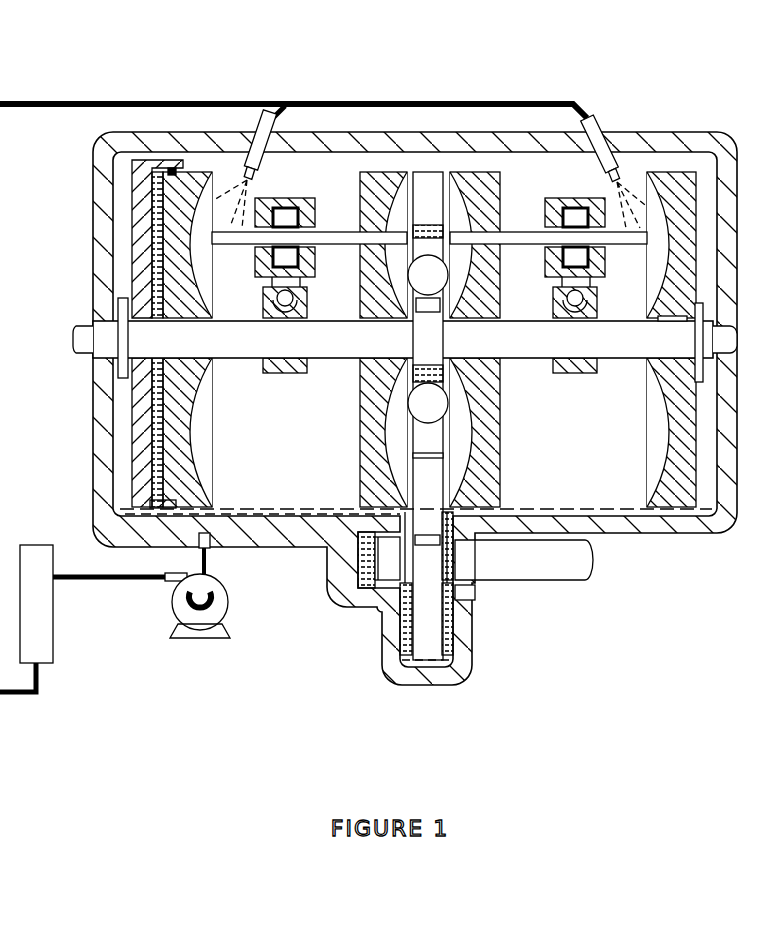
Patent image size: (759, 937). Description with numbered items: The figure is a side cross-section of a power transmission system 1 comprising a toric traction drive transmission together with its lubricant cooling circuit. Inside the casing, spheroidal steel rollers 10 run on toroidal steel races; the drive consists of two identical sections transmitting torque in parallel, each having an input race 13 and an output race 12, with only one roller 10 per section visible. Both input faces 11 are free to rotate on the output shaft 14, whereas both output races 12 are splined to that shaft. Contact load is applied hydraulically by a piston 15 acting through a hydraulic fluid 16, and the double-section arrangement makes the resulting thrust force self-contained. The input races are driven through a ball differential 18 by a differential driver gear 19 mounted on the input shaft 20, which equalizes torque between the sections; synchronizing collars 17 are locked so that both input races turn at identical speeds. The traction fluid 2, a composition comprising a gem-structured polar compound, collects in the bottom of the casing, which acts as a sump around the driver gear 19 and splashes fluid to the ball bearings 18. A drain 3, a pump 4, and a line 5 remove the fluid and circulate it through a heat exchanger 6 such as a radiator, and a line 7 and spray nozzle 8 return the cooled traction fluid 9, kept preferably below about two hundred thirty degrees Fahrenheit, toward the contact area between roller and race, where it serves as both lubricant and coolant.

The vertical drive shaft 1 is at (455, 655).
The traction fluid 2 is at (293, 517).
The drain 3 is at (208, 553).
The pump 4 is at (198, 642).
The line 5 is at (130, 580).
The heat exchanger 6 is at (57, 662).
The line 7 is at (86, 102).
The spray nozzle 8 is at (268, 124).
The cooled traction fluid 9 is at (242, 195).
The spheroidal steel roller 10 is at (333, 246).
The input face 11 is at (200, 257).
The output race 12 is at (131, 245).
The input race 13 is at (383, 185).
The output shaft 14 is at (147, 333).
The piston 15 is at (142, 408).
The hydraulic fluid 16 is at (157, 465).
The synchronizing collar 17 is at (284, 373).
The ball differential 18 is at (413, 232).
The differential driver gear 19 is at (429, 270).
The input shaft 20 is at (550, 580).